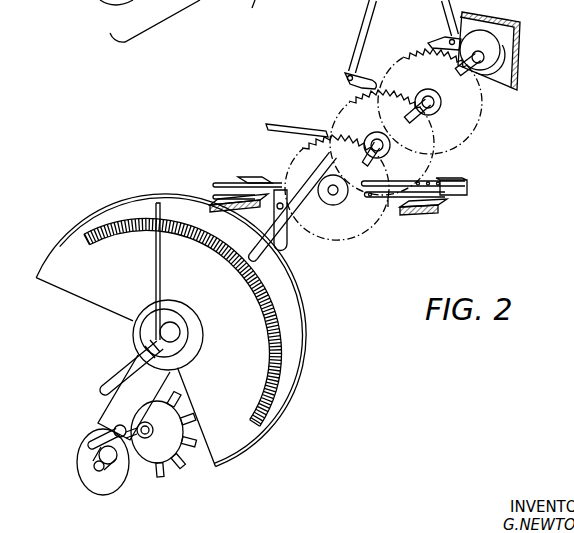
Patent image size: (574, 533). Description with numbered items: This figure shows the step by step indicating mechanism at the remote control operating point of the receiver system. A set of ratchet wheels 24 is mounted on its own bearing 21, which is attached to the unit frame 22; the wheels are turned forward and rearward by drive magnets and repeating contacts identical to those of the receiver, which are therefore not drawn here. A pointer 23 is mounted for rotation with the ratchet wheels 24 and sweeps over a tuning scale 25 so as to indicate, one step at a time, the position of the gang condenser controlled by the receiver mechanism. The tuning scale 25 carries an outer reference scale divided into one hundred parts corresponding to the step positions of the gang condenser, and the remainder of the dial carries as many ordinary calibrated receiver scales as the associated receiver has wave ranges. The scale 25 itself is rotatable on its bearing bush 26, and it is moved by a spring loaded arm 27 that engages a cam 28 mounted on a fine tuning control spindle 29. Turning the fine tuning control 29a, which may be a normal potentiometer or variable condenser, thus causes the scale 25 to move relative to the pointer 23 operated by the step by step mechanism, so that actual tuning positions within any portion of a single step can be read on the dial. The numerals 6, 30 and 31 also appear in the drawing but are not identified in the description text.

The housing portion 6 is at (82, 3).
The bearing 21 is at (487, 68).
The unit frame 22 is at (510, 37).
The pointer 23 is at (157, 293).
The set of ratchet wheels 24 is at (462, 140).
The tuning scale 25 is at (292, 380).
The bearing bush 26 is at (180, 352).
The spring loaded arm 27 is at (118, 408).
The cam 28 is at (92, 445).
The fine tuning control spindle 29 is at (98, 468).
The fine tuning control 29a is at (157, 455).
The pawl bar 30 is at (273, 183).
The slide bar 31 is at (390, 210).